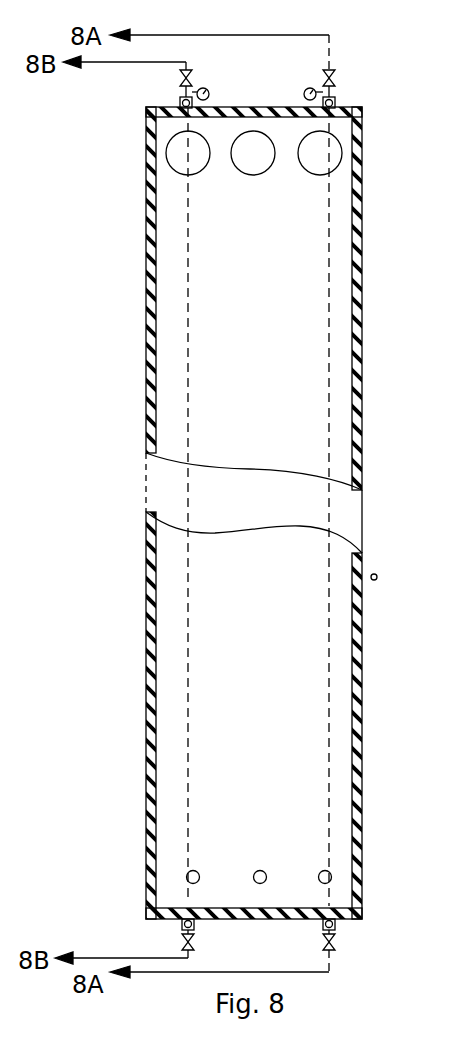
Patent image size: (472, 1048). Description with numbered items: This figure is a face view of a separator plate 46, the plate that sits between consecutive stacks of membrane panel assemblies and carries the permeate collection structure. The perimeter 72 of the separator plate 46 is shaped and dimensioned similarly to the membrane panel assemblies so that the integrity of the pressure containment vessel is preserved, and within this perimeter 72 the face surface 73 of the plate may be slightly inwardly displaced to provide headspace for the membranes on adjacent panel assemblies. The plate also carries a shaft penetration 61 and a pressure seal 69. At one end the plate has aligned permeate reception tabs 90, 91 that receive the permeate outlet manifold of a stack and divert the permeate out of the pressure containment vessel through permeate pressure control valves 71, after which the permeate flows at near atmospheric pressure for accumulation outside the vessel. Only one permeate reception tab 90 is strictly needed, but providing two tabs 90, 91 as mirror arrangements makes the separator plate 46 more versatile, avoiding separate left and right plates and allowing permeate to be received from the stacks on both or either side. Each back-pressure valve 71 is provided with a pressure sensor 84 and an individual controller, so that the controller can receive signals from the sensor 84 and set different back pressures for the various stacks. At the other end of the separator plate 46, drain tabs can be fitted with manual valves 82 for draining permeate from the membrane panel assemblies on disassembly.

The separator plate 46 is at (378, 578).
The shaft penetration 61 is at (317, 162).
The pressure seal 69 is at (260, 877).
The permeate pressure control valve 71 is at (333, 76).
The perimeter 72 is at (362, 420).
The face surface 73 is at (307, 608).
The manual valve 82 is at (336, 944).
The pressure sensor 84 is at (308, 88).
The permeate reception tab 90 is at (336, 101).
The permeate reception tab 91 is at (337, 921).